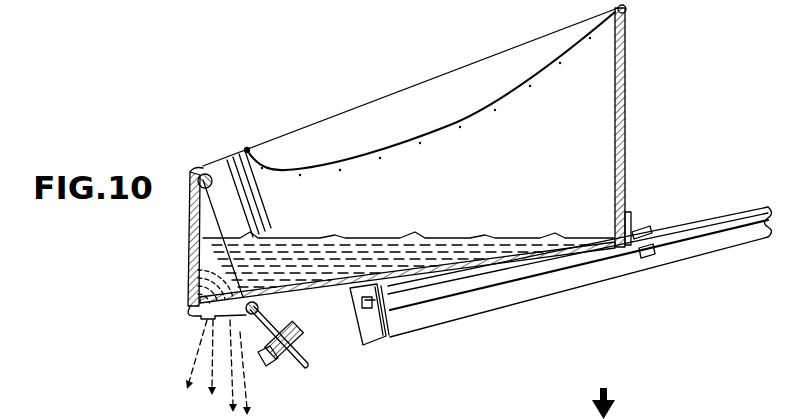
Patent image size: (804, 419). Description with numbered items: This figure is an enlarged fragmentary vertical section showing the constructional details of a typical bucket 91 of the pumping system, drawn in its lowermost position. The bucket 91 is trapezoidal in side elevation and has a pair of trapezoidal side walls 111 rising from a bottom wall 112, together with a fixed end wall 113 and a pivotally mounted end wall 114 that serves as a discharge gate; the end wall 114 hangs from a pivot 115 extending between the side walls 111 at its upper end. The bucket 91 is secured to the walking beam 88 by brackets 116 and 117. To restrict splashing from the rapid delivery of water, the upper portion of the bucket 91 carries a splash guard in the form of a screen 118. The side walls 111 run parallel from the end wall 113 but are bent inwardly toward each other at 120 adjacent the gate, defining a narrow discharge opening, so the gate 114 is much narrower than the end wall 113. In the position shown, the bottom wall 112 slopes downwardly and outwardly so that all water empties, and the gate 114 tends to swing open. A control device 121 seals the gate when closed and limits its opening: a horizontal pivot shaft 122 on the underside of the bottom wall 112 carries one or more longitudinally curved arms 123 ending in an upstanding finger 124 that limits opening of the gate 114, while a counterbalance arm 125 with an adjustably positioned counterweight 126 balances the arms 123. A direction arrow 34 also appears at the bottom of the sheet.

The direction arrow 34 is at (656, 418).
The walking beam 88 is at (700, 243).
The bucket 91 is at (634, 120).
The side walls 111 is at (338, 127).
The bottom wall 112 is at (486, 262).
The fixed end wall 113 is at (625, 150).
The pivotally mounted end wall 114 is at (190, 232).
The pivot 115 is at (203, 172).
The bracket 116 is at (398, 336).
The bracket 117 is at (632, 214).
The screen 118 is at (502, 98).
The inwardly bent portion 120 is at (272, 220).
The control device 121 is at (252, 338).
The horizontal pivot shaft 122 is at (218, 367).
The arm 123 is at (200, 318).
The upstanding finger 124 is at (187, 300).
The counterbalance arm 125 is at (303, 367).
The counterweight 126 is at (290, 340).